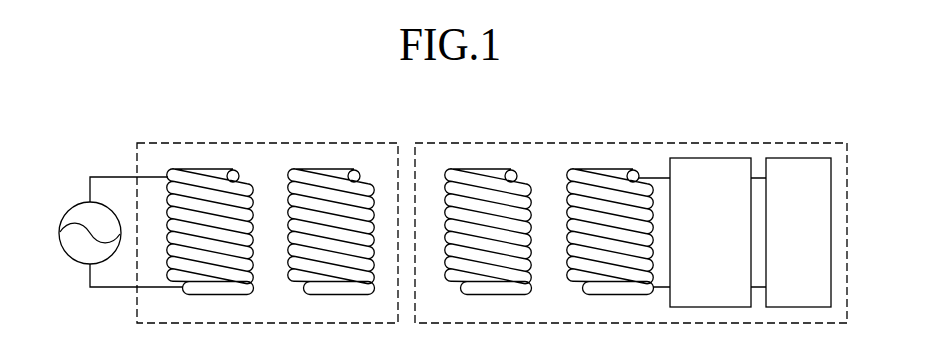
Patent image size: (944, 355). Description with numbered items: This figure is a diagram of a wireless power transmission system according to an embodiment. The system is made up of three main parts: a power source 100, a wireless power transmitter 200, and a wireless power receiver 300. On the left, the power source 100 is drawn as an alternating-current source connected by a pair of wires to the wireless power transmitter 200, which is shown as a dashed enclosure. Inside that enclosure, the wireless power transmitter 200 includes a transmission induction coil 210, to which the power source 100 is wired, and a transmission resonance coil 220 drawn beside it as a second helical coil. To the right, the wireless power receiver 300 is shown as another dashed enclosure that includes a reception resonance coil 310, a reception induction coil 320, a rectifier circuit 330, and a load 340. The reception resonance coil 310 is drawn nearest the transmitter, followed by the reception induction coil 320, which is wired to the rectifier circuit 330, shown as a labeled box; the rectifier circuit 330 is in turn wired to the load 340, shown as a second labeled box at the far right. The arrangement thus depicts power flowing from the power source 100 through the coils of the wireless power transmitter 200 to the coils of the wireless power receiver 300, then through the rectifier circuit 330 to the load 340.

The power source 100 is at (66, 206).
The wireless power transmitter 200 is at (158, 142).
The transmission induction coil 210 is at (222, 187).
The transmission resonance coil 220 is at (332, 185).
The wireless power receiver 300 is at (537, 142).
The reception resonance coil 310 is at (483, 182).
The reception induction coil 320 is at (618, 187).
The rectifier circuit 330 is at (710, 157).
The load 340 is at (797, 157).